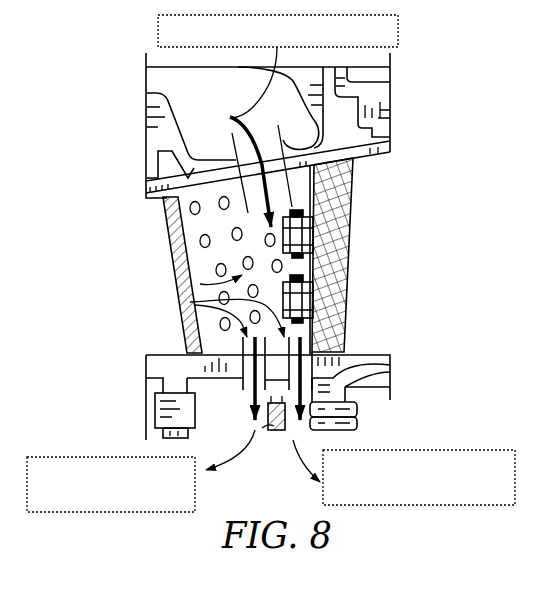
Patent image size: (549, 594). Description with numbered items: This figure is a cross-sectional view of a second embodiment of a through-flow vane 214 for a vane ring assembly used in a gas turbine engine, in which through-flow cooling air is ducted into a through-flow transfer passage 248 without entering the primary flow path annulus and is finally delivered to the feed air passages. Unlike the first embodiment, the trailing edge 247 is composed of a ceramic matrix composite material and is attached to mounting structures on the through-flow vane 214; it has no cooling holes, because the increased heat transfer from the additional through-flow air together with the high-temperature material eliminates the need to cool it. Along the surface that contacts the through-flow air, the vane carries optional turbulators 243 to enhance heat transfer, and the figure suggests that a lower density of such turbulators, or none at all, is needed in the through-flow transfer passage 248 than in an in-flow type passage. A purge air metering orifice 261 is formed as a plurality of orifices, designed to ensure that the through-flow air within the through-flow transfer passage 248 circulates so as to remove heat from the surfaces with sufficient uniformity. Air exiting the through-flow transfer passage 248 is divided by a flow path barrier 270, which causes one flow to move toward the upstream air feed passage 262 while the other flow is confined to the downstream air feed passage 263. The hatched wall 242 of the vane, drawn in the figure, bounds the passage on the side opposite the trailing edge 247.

The through-flow vane 214 is at (116, 64).
The wall 242 is at (166, 212).
The turbulators 243 is at (203, 250).
The trailing edge 247 is at (352, 204).
The through-flow transfer passage 248 is at (200, 284).
The purge air metering orifice 261 is at (190, 302).
The upstream air feed passage 262 is at (80, 456).
The downstream air feed passage 263 is at (452, 449).
The flow path barrier 270 is at (296, 426).